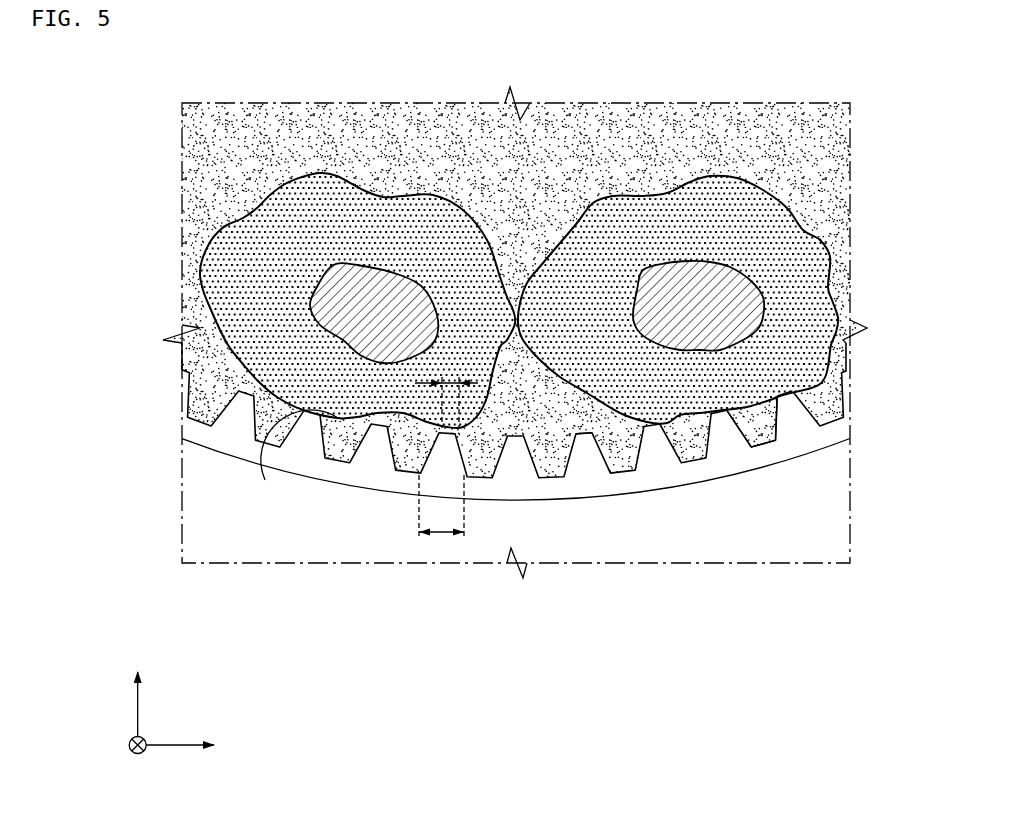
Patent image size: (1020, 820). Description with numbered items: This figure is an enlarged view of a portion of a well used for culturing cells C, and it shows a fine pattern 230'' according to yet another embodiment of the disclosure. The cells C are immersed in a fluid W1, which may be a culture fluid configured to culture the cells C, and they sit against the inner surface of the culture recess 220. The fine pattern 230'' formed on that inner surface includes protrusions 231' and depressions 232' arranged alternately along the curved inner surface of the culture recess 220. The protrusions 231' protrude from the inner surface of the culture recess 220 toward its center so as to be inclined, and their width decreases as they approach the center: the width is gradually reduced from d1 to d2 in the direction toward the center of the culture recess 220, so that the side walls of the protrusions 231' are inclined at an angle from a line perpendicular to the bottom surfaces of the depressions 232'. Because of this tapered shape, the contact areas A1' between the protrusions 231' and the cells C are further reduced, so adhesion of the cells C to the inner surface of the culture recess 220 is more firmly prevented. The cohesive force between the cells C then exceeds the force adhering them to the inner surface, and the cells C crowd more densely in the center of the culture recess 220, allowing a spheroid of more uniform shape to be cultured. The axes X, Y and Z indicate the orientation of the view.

The fluid W1 is at (235, 148).
The cells C is at (763, 247).
The protrusion width d1 is at (441, 532).
The reduced protrusion width d2 is at (465, 375).
The contact area A1' is at (569, 528).
The culture recess 220 is at (627, 483).
The depressions 232' is at (748, 509).
The protrusions 231' is at (805, 507).
The fine pattern 230'' is at (514, 505).
The X axis X is at (196, 745).
The Y axis Y is at (127, 755).
The Z axis Z is at (138, 682).